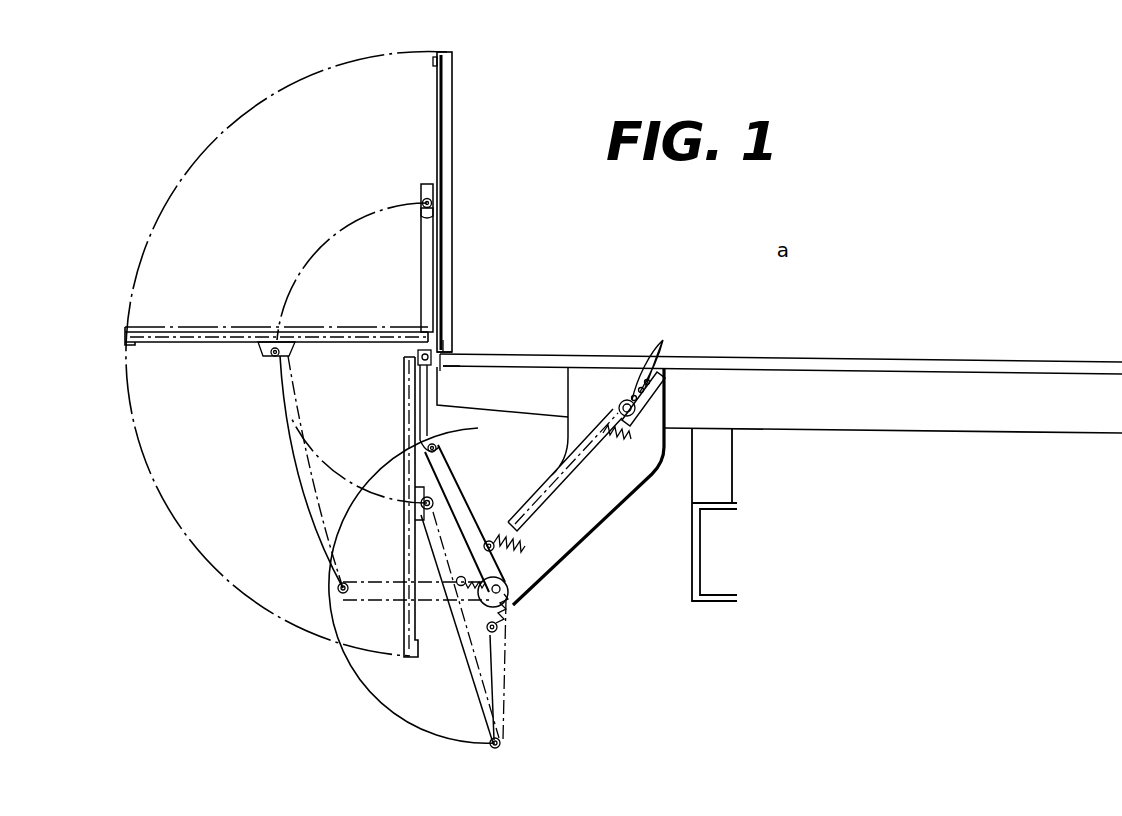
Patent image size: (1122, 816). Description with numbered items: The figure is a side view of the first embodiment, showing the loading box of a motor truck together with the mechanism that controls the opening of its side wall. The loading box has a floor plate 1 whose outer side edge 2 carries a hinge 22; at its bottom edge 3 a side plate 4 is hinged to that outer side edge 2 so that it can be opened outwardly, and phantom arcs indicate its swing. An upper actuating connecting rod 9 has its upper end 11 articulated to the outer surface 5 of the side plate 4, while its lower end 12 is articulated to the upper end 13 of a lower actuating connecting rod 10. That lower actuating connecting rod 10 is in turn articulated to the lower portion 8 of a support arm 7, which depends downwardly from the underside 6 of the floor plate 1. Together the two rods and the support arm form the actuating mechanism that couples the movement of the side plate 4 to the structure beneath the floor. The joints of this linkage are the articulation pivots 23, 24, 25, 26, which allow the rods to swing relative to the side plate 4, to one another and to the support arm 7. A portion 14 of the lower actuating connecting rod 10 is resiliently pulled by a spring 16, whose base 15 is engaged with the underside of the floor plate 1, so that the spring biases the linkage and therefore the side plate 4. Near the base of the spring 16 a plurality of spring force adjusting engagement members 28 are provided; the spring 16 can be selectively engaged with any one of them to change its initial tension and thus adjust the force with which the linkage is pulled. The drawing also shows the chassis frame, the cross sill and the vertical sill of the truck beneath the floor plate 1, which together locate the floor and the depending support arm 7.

The floor plate 1 is at (890, 358).
The outer side edge 2 is at (447, 367).
The bottom edge 3 is at (446, 346).
The side plate 4 is at (452, 126).
The outer surface 5 is at (437, 119).
The underside 6 is at (544, 370).
The support arm 7 is at (610, 515).
The lower portion 8 is at (528, 590).
The upper actuating connecting rod 9 is at (421, 292).
The lower actuating connecting rod 10 is at (457, 492).
The upper end 11 is at (421, 215).
The lower end 12 is at (432, 432).
The upper end 13 is at (440, 454).
The portion 14 is at (518, 563).
The base 15 is at (628, 398).
The spring 16 is at (580, 541).
The hinge 22 is at (418, 359).
The articulation pivot 23 is at (424, 200).
The articulation pivot 24 is at (460, 469).
The articulation pivot 25 is at (515, 612).
The articulation pivot 26 is at (489, 539).
The spring force adjusting engagement member 28 is at (657, 342).